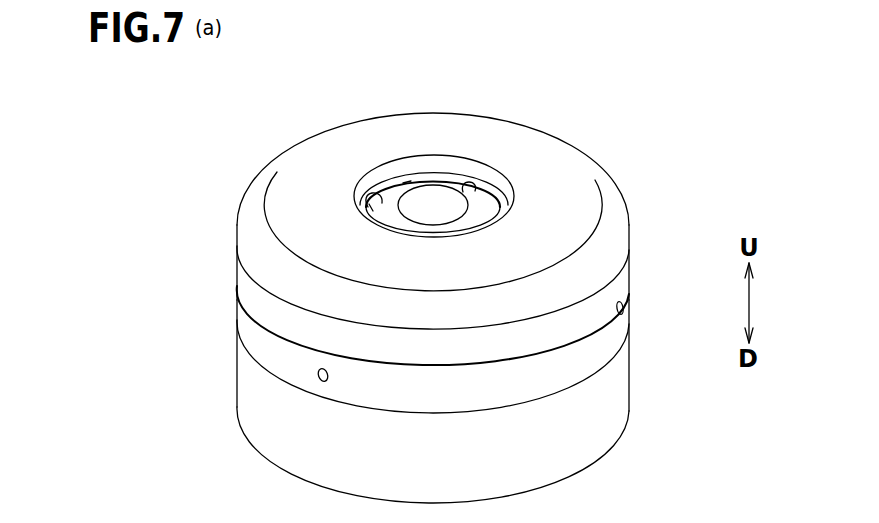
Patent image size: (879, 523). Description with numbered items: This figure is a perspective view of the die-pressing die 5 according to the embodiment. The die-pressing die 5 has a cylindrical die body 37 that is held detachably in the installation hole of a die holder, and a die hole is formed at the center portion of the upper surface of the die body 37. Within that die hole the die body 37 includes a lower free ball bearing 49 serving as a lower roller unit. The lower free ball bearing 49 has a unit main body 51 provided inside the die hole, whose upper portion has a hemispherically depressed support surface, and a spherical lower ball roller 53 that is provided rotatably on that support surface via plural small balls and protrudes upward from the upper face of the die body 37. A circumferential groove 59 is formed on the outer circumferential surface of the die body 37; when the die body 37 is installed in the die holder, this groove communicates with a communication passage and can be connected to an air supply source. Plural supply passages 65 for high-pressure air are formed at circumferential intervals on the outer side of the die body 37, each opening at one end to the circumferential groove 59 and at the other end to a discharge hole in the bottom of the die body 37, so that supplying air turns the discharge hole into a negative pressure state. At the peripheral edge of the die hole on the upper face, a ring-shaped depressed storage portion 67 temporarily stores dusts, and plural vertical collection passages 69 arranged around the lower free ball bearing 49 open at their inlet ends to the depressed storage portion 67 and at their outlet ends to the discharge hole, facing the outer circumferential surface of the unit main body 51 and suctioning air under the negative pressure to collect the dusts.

The die-pressing die 5 is at (528, 92).
The die body 37 is at (629, 250).
The lower free ball bearing 49 is at (488, 199).
The unit main body 51 is at (474, 218).
The lower ball roller 53 is at (434, 193).
The circumferential groove 59 is at (252, 322).
The supply passages 65 is at (322, 382).
The depressed storage portion 67 is at (407, 181).
The collection passages 69 is at (377, 178).